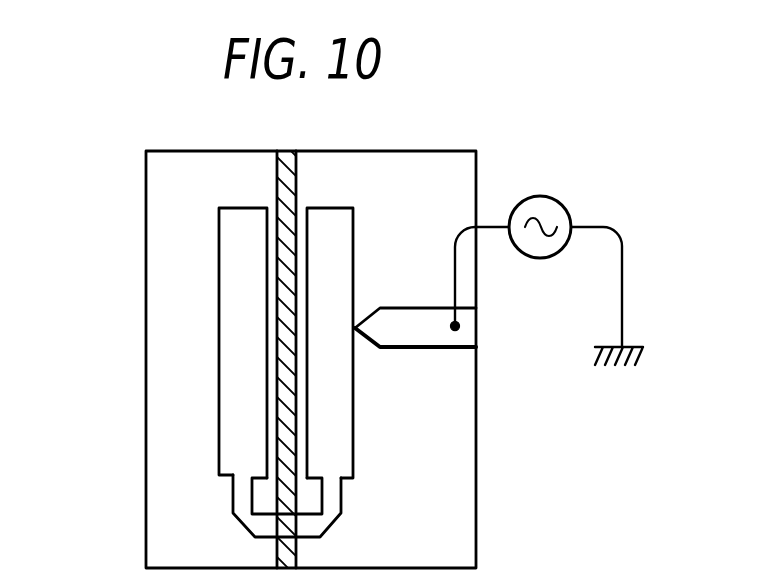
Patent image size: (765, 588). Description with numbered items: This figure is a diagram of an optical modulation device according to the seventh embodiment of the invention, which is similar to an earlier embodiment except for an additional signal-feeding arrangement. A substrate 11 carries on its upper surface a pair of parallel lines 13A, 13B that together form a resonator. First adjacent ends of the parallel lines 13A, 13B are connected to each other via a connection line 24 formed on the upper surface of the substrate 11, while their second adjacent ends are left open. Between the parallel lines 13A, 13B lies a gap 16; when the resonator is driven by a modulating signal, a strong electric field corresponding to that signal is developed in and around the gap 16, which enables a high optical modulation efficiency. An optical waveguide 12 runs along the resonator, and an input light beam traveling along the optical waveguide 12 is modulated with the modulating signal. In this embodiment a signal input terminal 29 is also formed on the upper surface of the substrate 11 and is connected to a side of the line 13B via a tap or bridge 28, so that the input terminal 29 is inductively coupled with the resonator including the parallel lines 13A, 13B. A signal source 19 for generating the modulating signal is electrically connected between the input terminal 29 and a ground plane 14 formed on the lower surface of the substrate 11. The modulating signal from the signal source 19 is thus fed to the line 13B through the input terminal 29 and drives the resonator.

The substrate 11 is at (182, 510).
The optical waveguide 12 is at (282, 278).
The gap 16 is at (271, 334).
The parallel line 13A is at (227, 388).
The parallel line 13B is at (335, 405).
The connection line 24 is at (330, 502).
The tap or bridge 28 is at (357, 312).
The signal input terminal 29 is at (408, 325).
The signal source 19 is at (552, 197).
The ground plane 14 is at (632, 343).